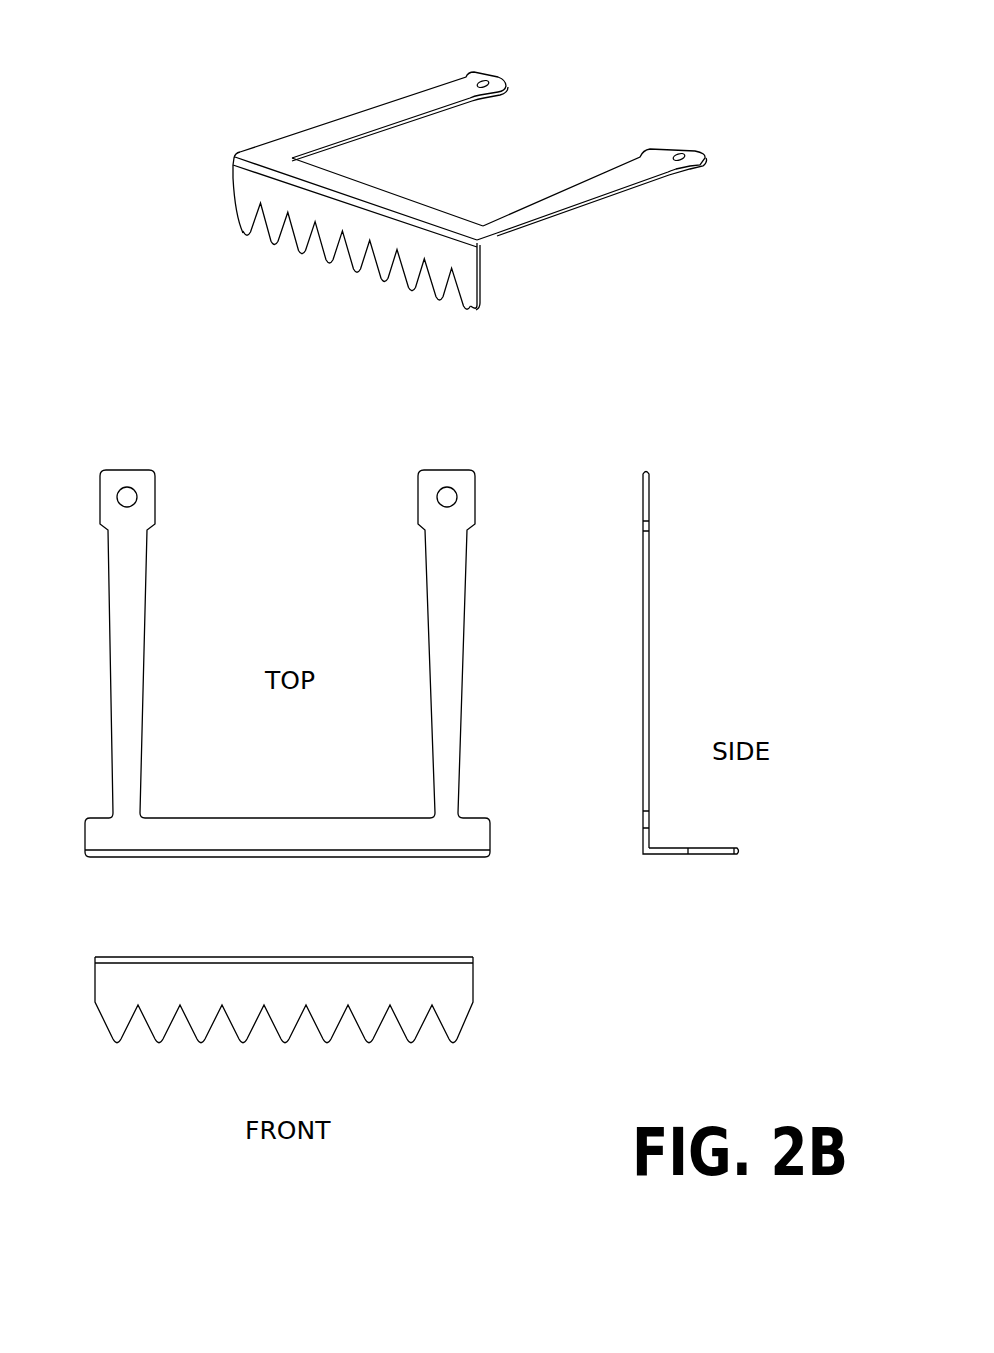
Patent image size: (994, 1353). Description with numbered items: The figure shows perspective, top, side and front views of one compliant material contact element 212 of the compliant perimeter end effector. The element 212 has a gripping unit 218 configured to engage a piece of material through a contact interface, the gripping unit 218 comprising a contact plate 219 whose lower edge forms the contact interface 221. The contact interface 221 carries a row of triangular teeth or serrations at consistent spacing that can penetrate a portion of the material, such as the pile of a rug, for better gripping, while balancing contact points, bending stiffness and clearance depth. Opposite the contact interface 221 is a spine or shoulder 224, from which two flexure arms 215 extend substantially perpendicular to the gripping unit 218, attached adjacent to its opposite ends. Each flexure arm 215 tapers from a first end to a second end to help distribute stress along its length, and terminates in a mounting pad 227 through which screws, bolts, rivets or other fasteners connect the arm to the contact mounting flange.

The compliant material contact element 212 is at (591, 70).
The flexure arm 215 is at (372, 90).
The gripping unit 218 is at (322, 298).
The contact plate 219 is at (486, 264).
The contact interface 221 is at (253, 232).
The spine 224 is at (262, 153).
The mounting pad 227 is at (120, 478).